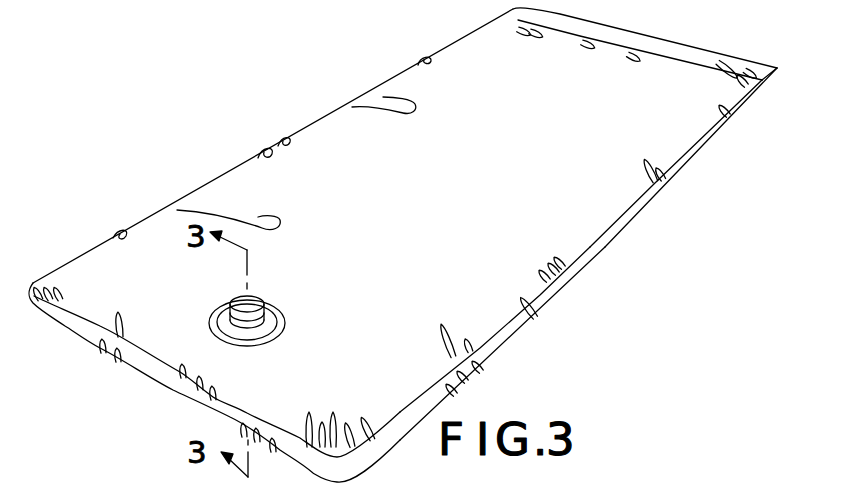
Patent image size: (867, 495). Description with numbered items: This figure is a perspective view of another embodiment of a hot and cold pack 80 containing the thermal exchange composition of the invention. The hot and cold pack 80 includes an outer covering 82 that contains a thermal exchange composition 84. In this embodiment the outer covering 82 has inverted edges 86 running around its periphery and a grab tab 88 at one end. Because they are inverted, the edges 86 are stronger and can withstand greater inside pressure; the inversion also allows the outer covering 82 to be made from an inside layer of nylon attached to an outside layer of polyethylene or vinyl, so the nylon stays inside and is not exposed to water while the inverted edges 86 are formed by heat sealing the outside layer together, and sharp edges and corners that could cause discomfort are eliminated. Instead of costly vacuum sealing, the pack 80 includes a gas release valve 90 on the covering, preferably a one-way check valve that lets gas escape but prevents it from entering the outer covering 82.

The hot and cold pack 80 is at (363, 62).
The outer covering 82 is at (598, 215).
The thermal exchange composition 84 is at (667, 125).
The inverted edges 86 is at (485, 333).
The grab tab 88 is at (623, 32).
The gas release valve 90 is at (268, 297).